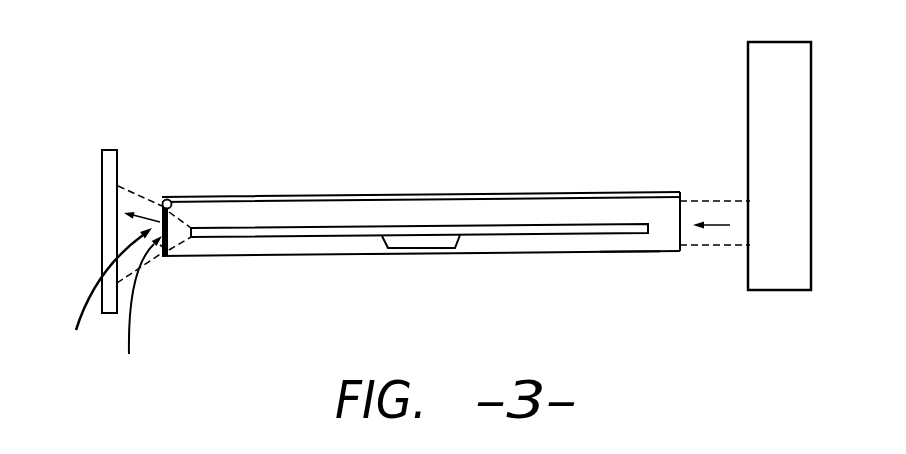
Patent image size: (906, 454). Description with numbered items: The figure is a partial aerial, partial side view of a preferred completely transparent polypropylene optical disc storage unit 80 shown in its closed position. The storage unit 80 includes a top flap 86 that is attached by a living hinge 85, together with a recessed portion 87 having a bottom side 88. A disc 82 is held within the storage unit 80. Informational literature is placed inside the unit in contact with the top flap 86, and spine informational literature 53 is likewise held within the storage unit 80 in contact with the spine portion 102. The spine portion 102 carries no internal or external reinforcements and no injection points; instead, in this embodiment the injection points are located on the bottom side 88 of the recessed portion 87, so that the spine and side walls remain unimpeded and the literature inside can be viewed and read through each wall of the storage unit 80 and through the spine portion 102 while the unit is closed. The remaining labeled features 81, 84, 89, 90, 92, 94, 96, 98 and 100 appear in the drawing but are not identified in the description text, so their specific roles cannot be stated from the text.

The cPP storage unit 80 is at (434, 214).
The inner bar tip end 81 is at (648, 231).
The disc 82 is at (475, 233).
The mounting block 84 is at (405, 248).
The living hinge 85 is at (166, 199).
The top flap 86 is at (303, 197).
The recessed portion 87 is at (625, 243).
The bottom side 88 is at (573, 257).
The lower end portion 89 is at (162, 246).
The right end wall 90 is at (680, 236).
The light source 92 is at (770, 42).
The light beam 94 is at (713, 199).
The lower diverging portion 96 is at (167, 254).
The emitted beam path 98 is at (134, 195).
The target plate 100 is at (101, 172).
The spine portion 102 is at (91, 295).
The spine informational literature 53 is at (132, 309).